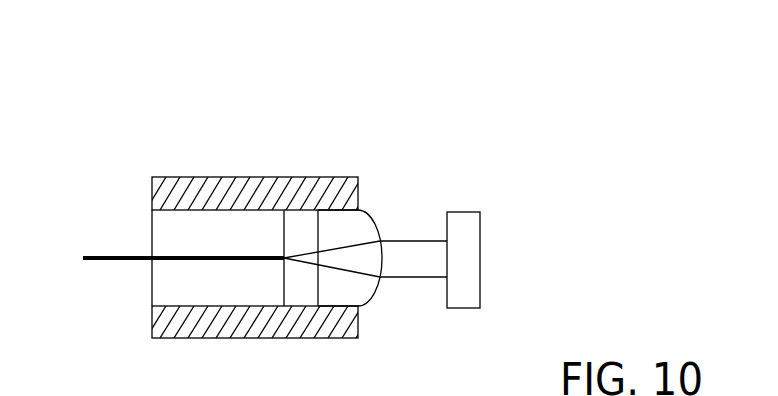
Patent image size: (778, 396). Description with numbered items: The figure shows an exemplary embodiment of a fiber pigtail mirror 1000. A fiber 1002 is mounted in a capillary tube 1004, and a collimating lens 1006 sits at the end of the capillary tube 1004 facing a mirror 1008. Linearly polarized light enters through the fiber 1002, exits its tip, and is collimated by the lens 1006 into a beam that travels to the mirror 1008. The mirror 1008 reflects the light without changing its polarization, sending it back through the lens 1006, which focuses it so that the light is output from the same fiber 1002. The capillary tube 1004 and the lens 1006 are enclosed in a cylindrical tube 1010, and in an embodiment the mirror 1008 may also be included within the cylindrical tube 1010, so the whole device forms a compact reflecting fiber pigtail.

The fiber pigtail mirror 1000 is at (129, 52).
The fiber 1002 is at (132, 262).
The capillary tube 1004 is at (176, 226).
The collimating lens 1006 is at (333, 227).
The mirror 1008 is at (463, 212).
The cylindrical tube 1010 is at (272, 178).